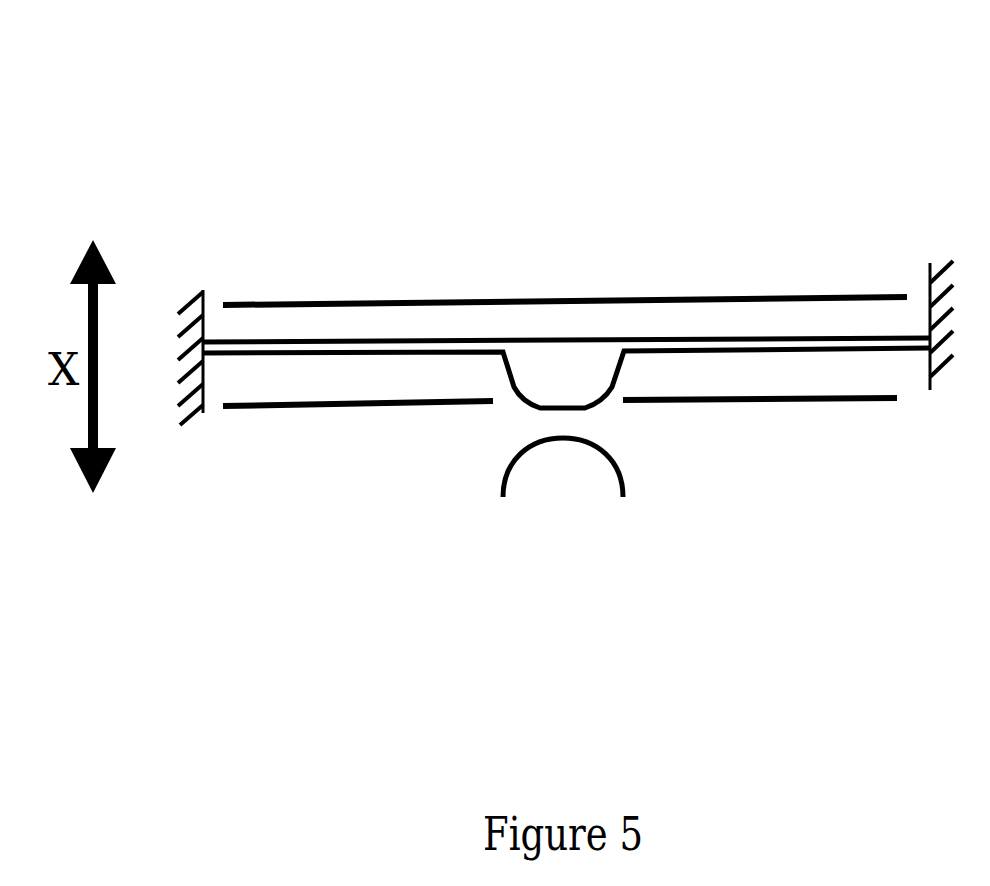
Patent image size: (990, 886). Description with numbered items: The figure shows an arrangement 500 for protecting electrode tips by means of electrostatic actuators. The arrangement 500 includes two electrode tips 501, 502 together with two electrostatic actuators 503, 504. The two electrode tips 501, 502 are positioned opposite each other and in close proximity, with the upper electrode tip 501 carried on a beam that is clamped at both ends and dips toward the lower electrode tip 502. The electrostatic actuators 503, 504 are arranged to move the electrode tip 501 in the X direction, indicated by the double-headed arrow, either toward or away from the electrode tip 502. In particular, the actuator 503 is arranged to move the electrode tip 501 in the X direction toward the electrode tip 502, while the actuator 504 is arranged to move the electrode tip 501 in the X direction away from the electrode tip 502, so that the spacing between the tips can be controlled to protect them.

The arrangement 500 is at (172, 140).
The electrode tip 501 is at (513, 390).
The electrode tip 502 is at (619, 461).
The electrostatic actuator 503 is at (293, 417).
The electrostatic actuator 504 is at (342, 298).